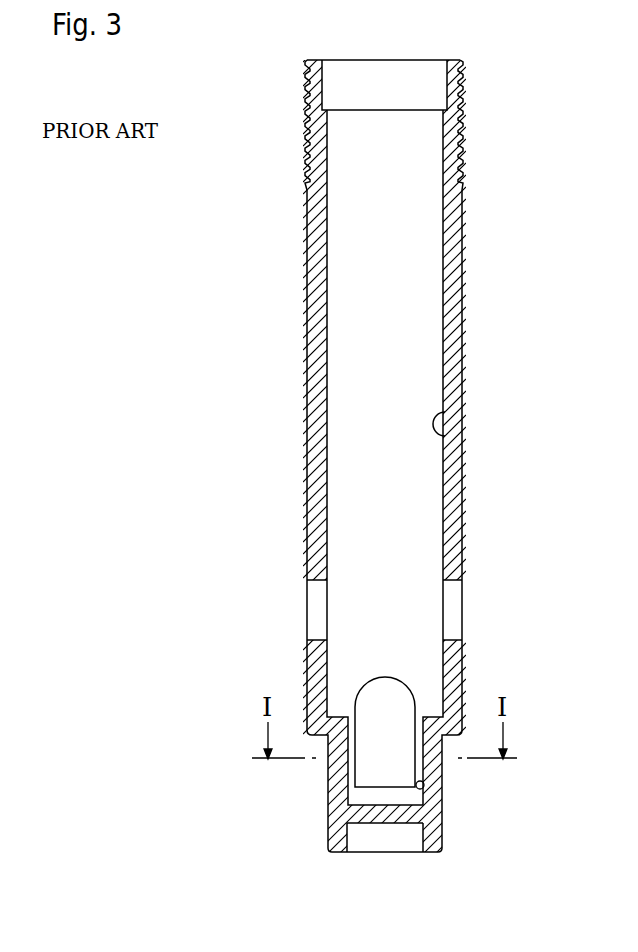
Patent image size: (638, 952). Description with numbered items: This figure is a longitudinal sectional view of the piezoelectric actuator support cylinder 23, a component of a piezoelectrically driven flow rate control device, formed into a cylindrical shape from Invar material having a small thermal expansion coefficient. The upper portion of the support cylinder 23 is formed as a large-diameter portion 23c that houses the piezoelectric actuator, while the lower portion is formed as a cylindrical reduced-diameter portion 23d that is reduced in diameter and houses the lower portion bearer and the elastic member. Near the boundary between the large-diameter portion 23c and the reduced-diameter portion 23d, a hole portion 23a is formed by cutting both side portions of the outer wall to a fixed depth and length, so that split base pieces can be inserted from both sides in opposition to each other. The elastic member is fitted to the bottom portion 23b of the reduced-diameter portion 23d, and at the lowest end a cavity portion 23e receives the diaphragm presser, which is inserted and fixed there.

The piezoelectric actuator support cylinder 23 is at (476, 366).
The hole portion 23a is at (387, 724).
The bottom portion 23b is at (368, 810).
The large-diameter portion 23c is at (450, 434).
The reduced-diameter portion 23d is at (424, 787).
The cavity portion 23e is at (398, 837).